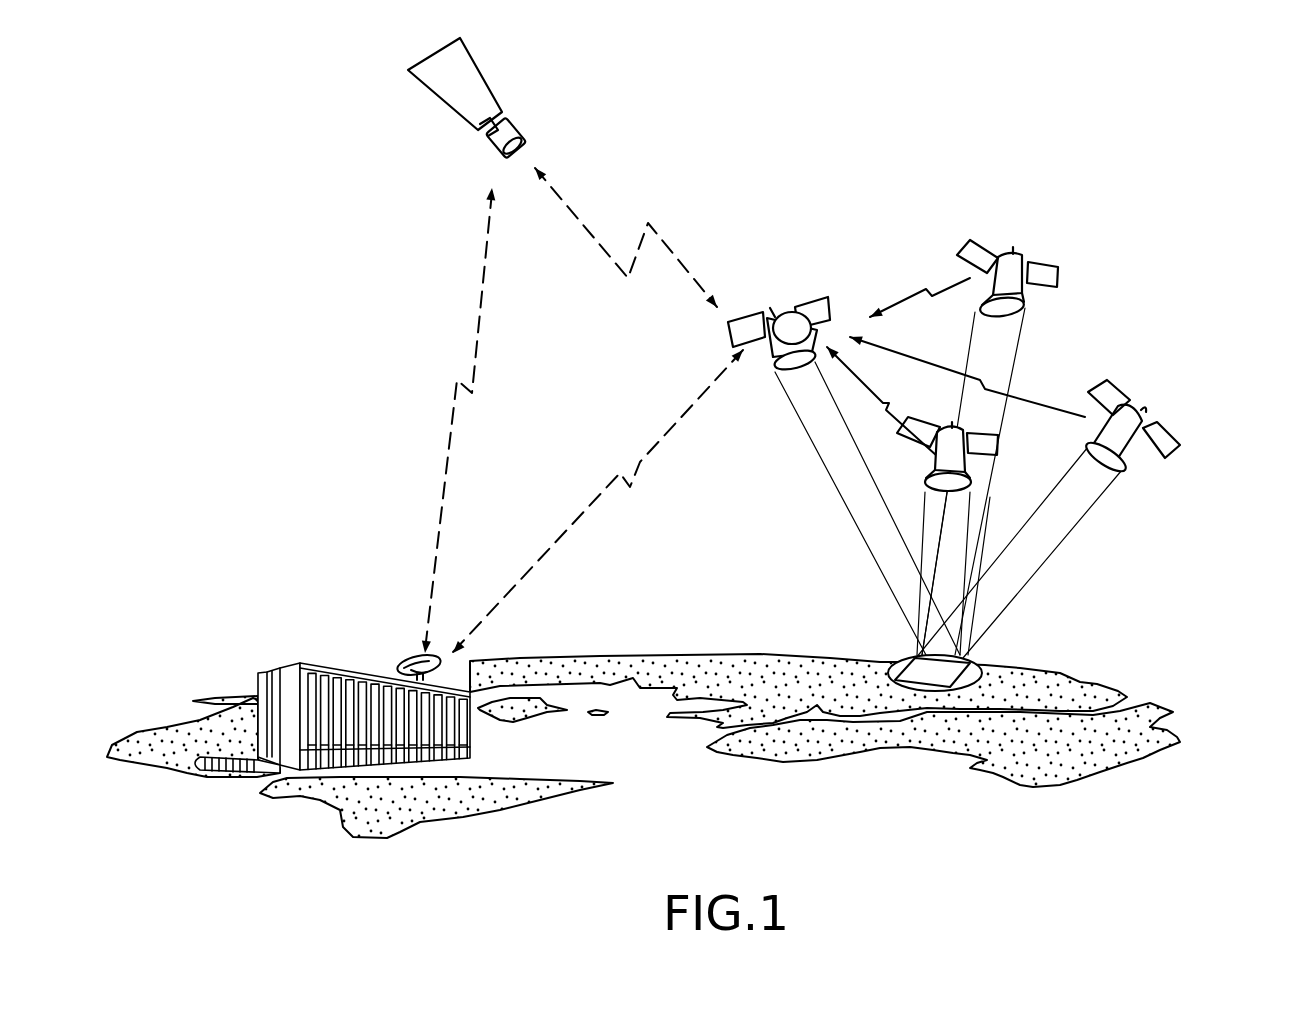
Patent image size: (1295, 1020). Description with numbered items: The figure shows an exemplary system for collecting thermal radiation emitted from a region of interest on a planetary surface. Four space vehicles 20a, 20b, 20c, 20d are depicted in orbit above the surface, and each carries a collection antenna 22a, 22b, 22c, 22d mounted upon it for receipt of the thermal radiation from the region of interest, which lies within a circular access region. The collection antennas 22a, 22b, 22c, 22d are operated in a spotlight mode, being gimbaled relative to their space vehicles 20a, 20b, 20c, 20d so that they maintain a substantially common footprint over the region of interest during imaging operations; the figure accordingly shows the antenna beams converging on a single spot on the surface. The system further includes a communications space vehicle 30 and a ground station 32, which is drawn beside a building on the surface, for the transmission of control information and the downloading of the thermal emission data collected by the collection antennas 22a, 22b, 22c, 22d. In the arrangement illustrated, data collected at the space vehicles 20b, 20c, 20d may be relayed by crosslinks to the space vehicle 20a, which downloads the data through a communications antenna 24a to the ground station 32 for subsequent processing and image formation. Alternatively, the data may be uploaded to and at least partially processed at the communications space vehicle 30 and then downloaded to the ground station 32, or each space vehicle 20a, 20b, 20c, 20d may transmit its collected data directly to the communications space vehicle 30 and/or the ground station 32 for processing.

The space vehicle 20a is at (805, 315).
The space vehicle 20b is at (874, 491).
The space vehicle 20c is at (1074, 280).
The space vehicle 20d is at (1181, 448).
The collection antenna 22a is at (774, 372).
The collection antenna 22b is at (927, 478).
The collection antenna 22c is at (1030, 302).
The collection antenna 22d is at (1125, 470).
The communications antenna 24a is at (817, 331).
The communications space vehicle 30 is at (478, 128).
The ground station 32 is at (400, 657).